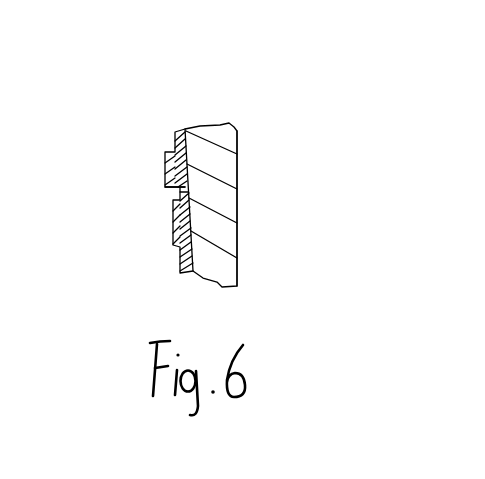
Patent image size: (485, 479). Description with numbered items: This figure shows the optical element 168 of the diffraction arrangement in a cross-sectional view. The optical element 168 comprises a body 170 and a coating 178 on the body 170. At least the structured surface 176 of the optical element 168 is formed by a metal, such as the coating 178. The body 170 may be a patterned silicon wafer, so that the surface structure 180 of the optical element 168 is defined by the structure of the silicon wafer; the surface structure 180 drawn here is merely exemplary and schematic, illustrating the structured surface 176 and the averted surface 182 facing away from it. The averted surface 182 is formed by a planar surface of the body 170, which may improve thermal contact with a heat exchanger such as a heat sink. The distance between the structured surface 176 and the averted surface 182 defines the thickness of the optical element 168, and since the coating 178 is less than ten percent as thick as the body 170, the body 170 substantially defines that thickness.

The optical element 168 is at (117, 135).
The body 170 is at (242, 101).
The structured surface 176 is at (170, 188).
The coating 178 is at (166, 173).
The surface structure 180 is at (161, 228).
The averted surface 182 is at (270, 132).